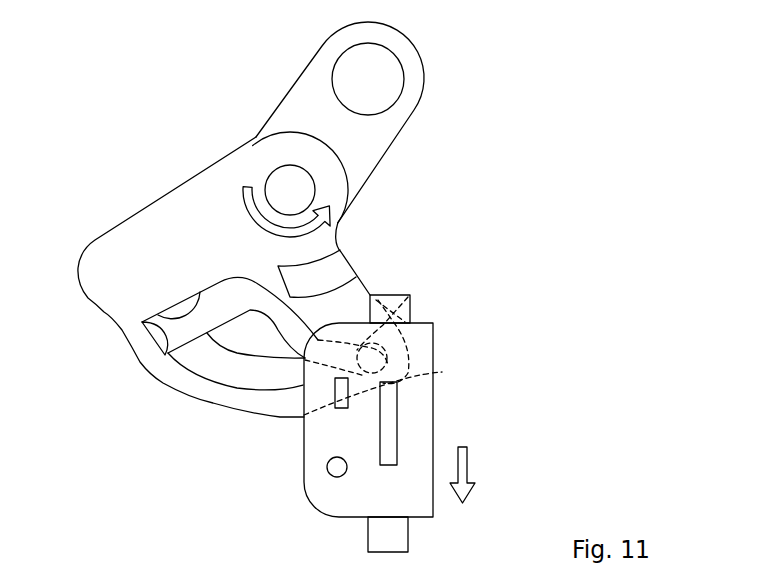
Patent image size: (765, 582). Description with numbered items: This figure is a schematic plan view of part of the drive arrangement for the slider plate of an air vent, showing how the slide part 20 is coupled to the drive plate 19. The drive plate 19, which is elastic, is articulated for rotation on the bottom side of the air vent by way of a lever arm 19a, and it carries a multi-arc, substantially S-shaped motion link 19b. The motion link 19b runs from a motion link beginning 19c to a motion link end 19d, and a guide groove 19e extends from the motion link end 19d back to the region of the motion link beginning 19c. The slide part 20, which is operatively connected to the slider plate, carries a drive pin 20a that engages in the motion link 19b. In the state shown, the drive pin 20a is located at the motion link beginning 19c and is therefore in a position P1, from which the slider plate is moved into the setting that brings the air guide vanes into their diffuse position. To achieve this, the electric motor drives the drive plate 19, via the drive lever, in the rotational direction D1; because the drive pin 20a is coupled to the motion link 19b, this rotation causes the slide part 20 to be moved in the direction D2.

The drive plate 19 is at (177, 190).
The lever arm 19a is at (293, 110).
The motion link 19b is at (141, 323).
The motion link beginning 19c is at (442, 372).
The motion link end 19d is at (168, 353).
The guide groove 19e is at (250, 372).
The slide part 20 is at (435, 418).
The drive pin 20a is at (412, 296).
The rotational direction D1 is at (343, 224).
The direction D2 is at (465, 462).
The position P1 is at (453, 317).